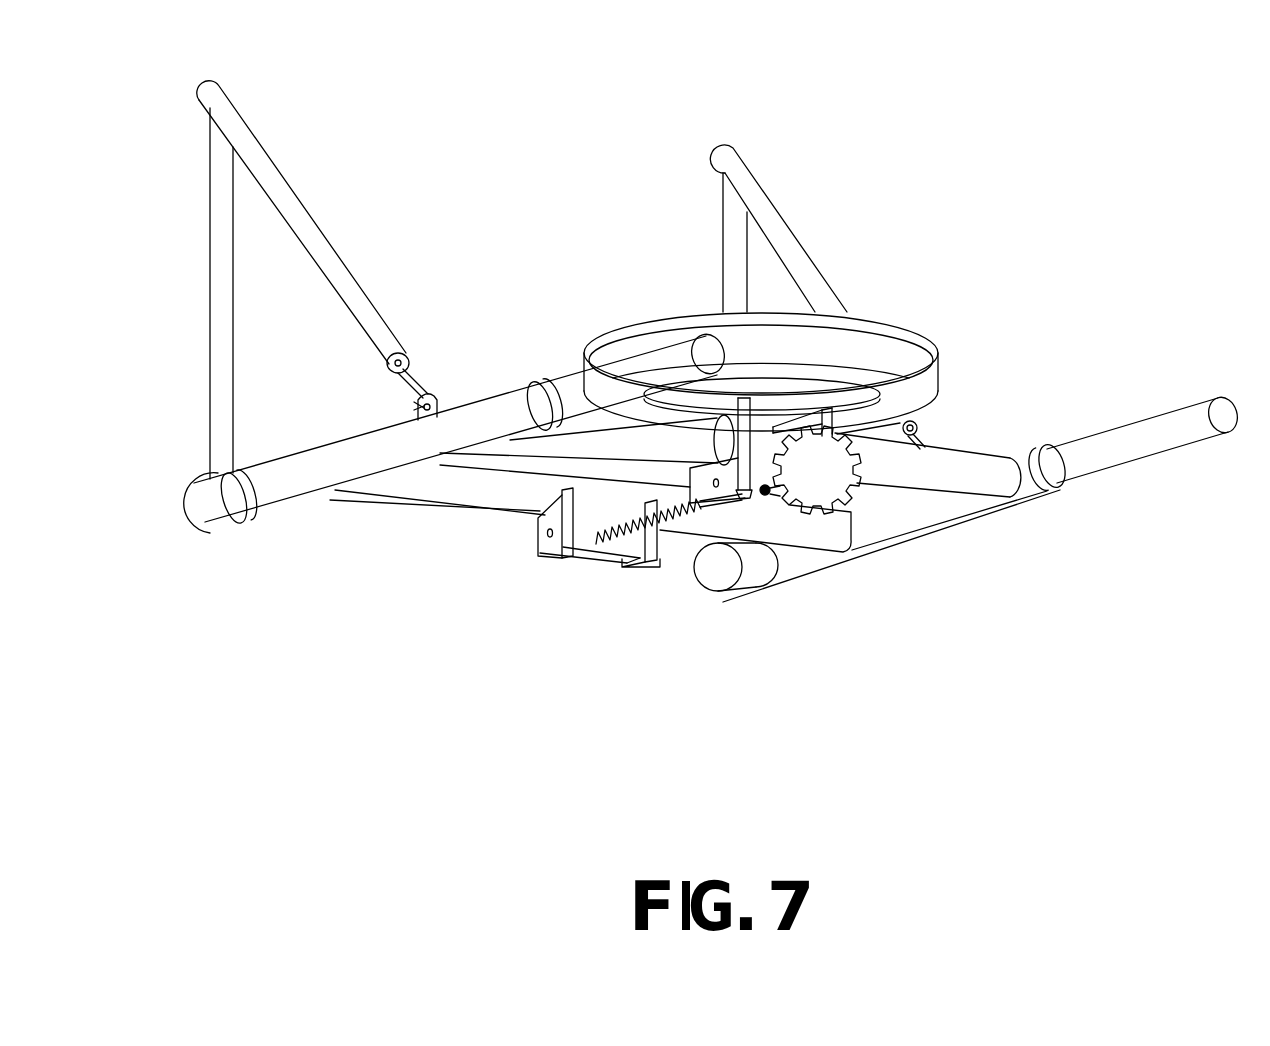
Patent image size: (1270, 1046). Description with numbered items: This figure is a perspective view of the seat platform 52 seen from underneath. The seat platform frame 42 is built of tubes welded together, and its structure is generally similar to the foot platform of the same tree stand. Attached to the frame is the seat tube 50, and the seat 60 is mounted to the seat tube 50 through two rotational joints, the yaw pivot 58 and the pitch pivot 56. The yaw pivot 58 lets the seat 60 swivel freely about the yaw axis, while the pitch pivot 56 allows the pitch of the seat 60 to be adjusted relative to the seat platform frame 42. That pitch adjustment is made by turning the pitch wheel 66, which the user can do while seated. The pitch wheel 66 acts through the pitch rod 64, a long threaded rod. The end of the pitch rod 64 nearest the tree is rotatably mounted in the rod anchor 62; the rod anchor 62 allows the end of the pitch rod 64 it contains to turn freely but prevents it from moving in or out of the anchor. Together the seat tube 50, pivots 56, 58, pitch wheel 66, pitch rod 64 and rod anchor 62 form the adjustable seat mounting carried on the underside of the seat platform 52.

The seat platform frame 42 is at (432, 443).
The seat tube 50 is at (940, 465).
The seat platform 52 is at (357, 687).
The pitch pivot 56 is at (733, 463).
The yaw pivot 58 is at (848, 407).
The seat 60 is at (857, 322).
The rod anchor 62 is at (545, 555).
The pitch rod 64 is at (628, 565).
The pitch wheel 66 is at (819, 472).